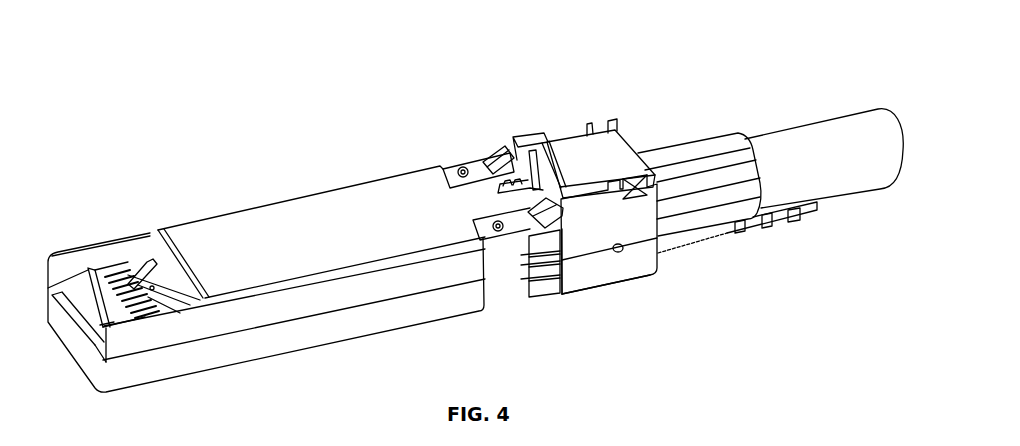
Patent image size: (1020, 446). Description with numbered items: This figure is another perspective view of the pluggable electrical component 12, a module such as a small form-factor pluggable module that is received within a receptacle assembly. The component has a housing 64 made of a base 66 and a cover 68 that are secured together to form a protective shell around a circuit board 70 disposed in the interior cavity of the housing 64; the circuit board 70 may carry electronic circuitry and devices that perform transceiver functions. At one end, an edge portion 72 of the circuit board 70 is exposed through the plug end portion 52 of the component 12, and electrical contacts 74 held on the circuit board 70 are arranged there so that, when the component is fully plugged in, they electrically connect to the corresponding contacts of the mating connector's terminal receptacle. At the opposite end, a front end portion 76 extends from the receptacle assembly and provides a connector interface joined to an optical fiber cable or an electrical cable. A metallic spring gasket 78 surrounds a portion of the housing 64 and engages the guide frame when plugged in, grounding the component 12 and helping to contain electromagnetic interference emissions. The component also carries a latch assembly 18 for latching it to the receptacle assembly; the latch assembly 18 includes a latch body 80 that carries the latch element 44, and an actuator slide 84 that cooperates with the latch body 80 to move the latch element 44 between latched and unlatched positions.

The pluggable electrical component 12 is at (255, 127).
The latch assembly 18 is at (749, 181).
The latch element 44 is at (514, 183).
The plug end portion 52 is at (83, 401).
The housing 64 is at (248, 317).
The base 66 is at (208, 228).
The cover 68 is at (353, 328).
The circuit board 70 is at (120, 265).
The edge portion 72 is at (88, 259).
The electrical contacts 74 is at (97, 290).
The front end portion 76 is at (557, 124).
The metallic spring gasket 78 is at (505, 290).
The latch body 80 is at (506, 183).
The actuator slide 84 is at (638, 148).